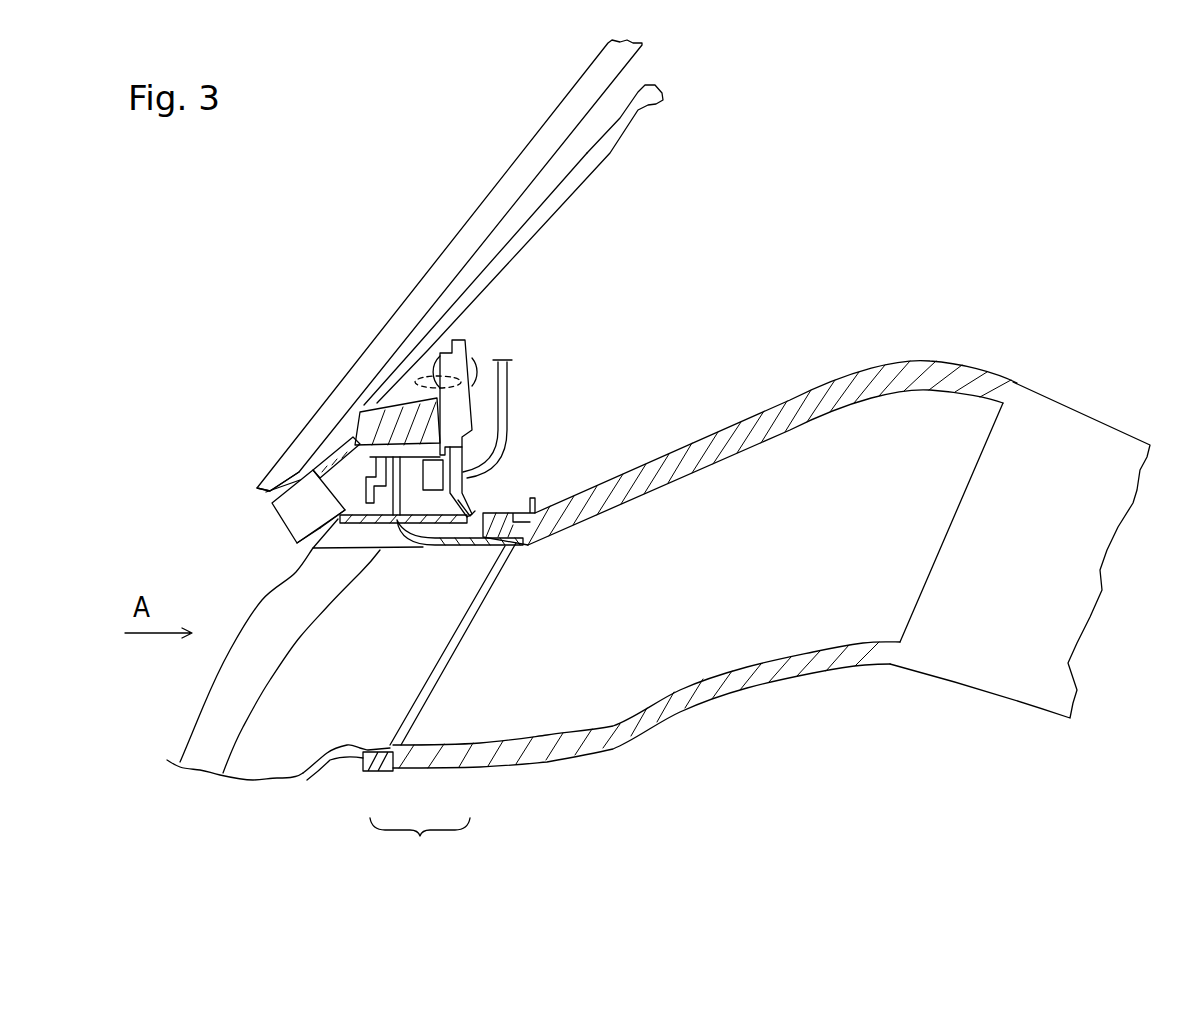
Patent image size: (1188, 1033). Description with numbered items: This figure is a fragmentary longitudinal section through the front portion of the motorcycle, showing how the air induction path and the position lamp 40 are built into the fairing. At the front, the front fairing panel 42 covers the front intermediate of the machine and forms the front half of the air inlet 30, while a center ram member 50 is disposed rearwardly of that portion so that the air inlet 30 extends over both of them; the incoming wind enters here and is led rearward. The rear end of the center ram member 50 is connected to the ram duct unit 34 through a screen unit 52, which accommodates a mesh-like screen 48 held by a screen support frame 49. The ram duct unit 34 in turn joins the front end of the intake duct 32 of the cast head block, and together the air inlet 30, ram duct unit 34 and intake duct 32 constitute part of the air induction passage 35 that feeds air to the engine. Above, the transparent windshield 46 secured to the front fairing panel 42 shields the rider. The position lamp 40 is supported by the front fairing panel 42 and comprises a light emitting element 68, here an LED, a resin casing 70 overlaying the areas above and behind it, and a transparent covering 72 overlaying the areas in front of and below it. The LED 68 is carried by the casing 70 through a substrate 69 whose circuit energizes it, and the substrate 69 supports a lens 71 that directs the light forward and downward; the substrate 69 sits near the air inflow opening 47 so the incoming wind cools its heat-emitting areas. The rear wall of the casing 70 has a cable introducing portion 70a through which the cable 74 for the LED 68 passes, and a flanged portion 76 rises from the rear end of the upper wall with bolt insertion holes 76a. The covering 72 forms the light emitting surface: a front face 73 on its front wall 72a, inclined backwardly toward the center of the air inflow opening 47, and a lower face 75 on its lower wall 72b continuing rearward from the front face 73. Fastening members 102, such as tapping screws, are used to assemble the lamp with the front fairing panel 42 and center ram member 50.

The air inlet 30 is at (261, 750).
The intake duct 32 is at (1078, 430).
The ram duct unit 34 is at (865, 660).
The air induction passage 35 is at (663, 677).
The position lamp 40 is at (255, 511).
The front fairing panel 42 is at (285, 468).
The transparent windshield 46 is at (597, 68).
The air inflow opening 47 is at (220, 713).
The mesh-like screen 48 is at (423, 720).
The screen support frame 49 is at (390, 776).
The center ram member 50 is at (328, 766).
The screen unit 52 is at (420, 842).
The light emitting element 68 is at (388, 523).
The substrate 69 is at (368, 440).
The casing 70 is at (490, 427).
The cable introducing portion 70a is at (465, 483).
The lens 71 is at (345, 437).
The covering 72 is at (272, 523).
The front wall 72a is at (288, 540).
The lower wall 72b is at (401, 525).
The front face 73 is at (298, 530).
The cable 74 is at (508, 388).
The lower face 75 is at (350, 543).
The flanged portion 76 is at (452, 348).
The bolt insertion holes 76a is at (418, 372).
The fastening members 102 is at (470, 362).